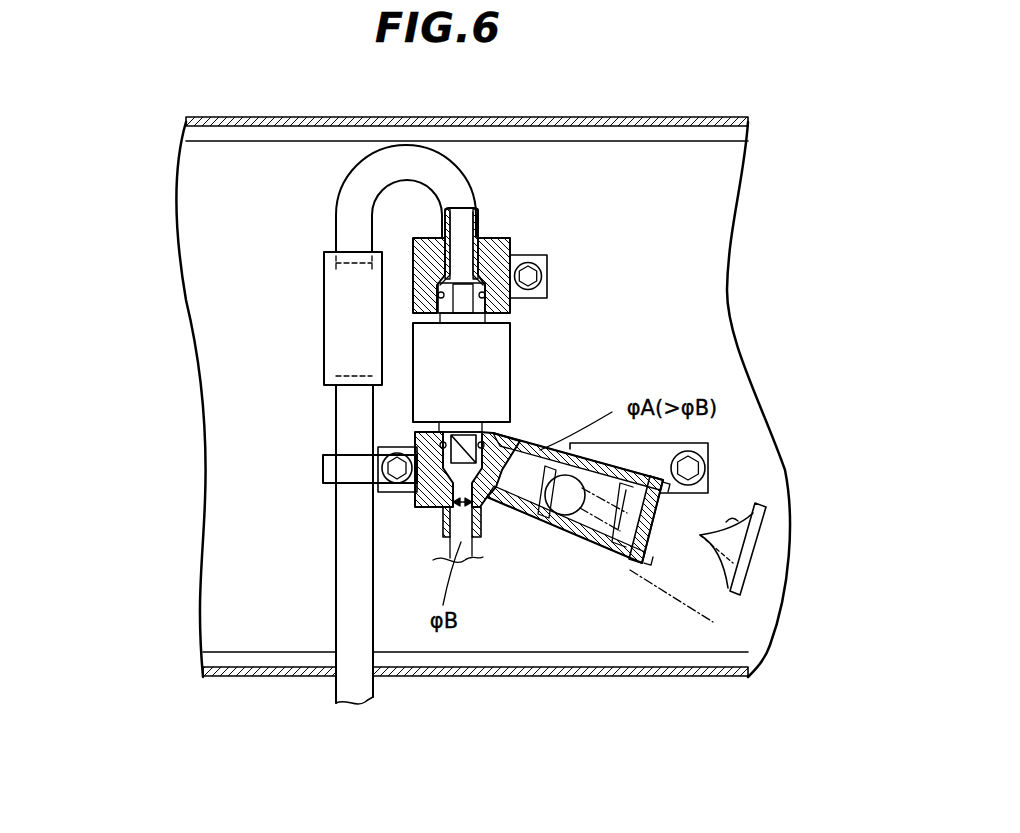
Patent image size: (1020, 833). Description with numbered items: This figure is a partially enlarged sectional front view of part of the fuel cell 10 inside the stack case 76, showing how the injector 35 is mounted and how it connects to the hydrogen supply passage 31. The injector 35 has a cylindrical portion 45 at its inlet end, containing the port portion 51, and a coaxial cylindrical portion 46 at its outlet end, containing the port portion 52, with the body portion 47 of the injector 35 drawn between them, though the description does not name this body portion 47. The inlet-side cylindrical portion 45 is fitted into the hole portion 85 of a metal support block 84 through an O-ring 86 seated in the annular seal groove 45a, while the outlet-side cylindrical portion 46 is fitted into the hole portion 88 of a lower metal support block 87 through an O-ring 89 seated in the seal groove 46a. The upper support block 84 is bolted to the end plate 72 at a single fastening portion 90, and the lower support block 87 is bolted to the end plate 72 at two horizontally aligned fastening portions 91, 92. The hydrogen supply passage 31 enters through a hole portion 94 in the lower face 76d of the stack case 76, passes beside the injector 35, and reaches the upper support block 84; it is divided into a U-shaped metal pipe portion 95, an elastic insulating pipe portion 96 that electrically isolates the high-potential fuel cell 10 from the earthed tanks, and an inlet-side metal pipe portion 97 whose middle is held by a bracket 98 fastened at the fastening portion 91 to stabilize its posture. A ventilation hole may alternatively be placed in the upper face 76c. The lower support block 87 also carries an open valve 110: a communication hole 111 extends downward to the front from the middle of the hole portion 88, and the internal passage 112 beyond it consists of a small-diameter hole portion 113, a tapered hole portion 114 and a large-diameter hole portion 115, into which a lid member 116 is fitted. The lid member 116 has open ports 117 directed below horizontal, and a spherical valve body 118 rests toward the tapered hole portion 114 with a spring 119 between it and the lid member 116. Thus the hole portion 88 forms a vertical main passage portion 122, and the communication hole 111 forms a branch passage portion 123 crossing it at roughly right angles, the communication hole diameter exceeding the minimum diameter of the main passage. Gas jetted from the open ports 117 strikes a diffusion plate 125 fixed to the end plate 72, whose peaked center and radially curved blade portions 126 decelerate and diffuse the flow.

The fuel cell 10 is at (171, 200).
The hydrogen supply passage 31 is at (334, 687).
The injector 35 is at (510, 382).
The cylindrical portion 45 is at (512, 268).
The annular seal groove 45a is at (440, 298).
The cylindrical portion 46 is at (420, 490).
The annular seal groove 46a is at (384, 458).
The regulator block 47 is at (511, 345).
The port portion 51 is at (488, 252).
The port portion 52 is at (425, 505).
The end plate 72 is at (770, 477).
The stack case 76 is at (488, 414).
The upper face 76c is at (325, 117).
The lower face 76d is at (265, 679).
The support block 84 is at (428, 238).
The hole portion 85 is at (453, 255).
The O-ring 86 is at (486, 303).
The support block 87 is at (435, 512).
The hole portion 88 is at (446, 548).
The O-ring 89 is at (490, 440).
The fastening portion 90 is at (548, 275).
The fastening portion 91 is at (418, 498).
The fastening portion 92 is at (710, 465).
The hole portion 94 is at (378, 679).
The metal pipe portion 95 is at (455, 172).
The insulating pipe portion 96 is at (338, 350).
The metal pipe portion 97 is at (446, 540).
The bracket 98 is at (324, 468).
The open valve 110 is at (487, 545).
The communication hole 111 is at (499, 523).
The internal passage 112 is at (660, 445).
The small-diameter hole portion 113 is at (543, 518).
The tapered hole portion 114 is at (588, 540).
The large-diameter hole portion 115 is at (630, 575).
The lid member 116 is at (767, 508).
The open ports 117 is at (660, 505).
The spherical valve body 118 is at (572, 515).
The spring 119 is at (720, 635).
The main passage portion 122 is at (416, 513).
The branch passage portion 123 is at (430, 437).
The diffusion plate 125 is at (745, 552).
The blade portions 126 is at (740, 547).